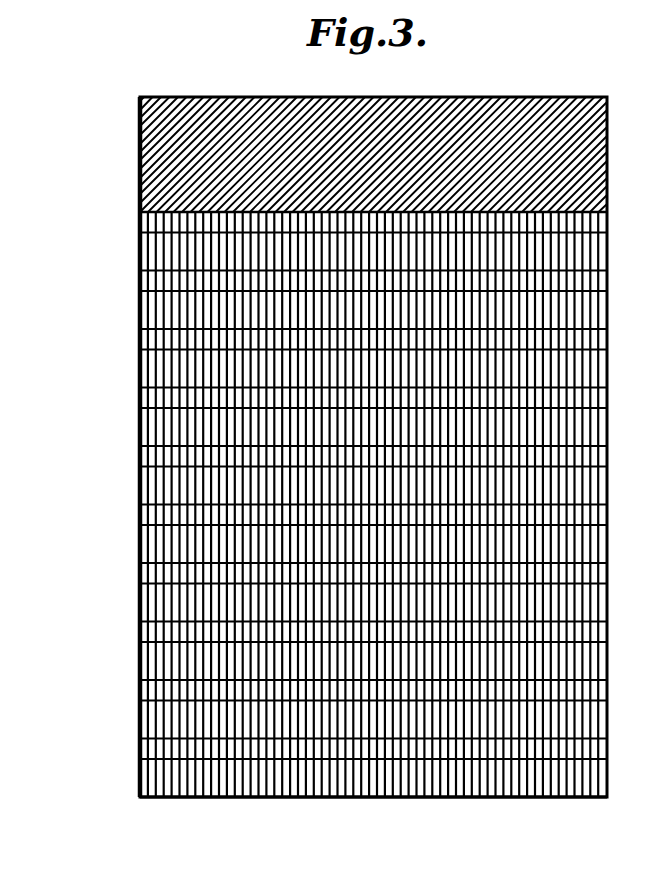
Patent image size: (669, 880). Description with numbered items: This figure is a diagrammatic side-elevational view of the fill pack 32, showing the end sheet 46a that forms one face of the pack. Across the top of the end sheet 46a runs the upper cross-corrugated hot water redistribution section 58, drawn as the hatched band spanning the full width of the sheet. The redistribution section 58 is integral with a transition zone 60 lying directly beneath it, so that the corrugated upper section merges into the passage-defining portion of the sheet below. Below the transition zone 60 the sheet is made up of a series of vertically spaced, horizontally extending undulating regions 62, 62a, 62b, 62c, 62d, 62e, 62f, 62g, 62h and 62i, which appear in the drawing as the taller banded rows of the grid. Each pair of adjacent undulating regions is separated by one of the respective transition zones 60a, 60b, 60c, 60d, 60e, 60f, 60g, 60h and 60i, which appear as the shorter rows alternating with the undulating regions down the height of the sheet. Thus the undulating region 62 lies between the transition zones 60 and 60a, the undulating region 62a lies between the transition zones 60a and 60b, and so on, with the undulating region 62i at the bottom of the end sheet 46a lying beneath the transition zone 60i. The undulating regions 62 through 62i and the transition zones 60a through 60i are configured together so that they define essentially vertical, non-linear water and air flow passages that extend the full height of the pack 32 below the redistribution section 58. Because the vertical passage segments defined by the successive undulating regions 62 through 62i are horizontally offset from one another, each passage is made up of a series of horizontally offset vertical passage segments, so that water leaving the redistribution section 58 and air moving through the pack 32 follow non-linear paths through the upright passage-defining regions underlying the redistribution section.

The fill pack 32 is at (263, 94).
The upper corrugated hot water redistribution section 58 is at (608, 130).
The end sheet 46a is at (307, 797).
The transition zone 60 is at (607, 232).
The undulating region 62 is at (607, 260).
The transition zone 60a is at (607, 287).
The undulating region 62a is at (607, 317).
The transition zone 60b is at (607, 342).
The undulating region 62b is at (607, 370).
The transition zone 60c is at (607, 398).
The undulating region 62c is at (607, 427).
The transition zone 60d is at (607, 455).
The undulating region 62d is at (607, 483).
The transition zone 60e is at (607, 515).
The undulating region 62e is at (607, 543).
The transition zone 60f is at (607, 572).
The undulating region 62f is at (607, 600).
The transition zone 60g is at (607, 630).
The undulating region 62g is at (607, 660).
The transition zone 60h is at (607, 688).
The undulating region 62h is at (607, 718).
The transition zone 60i is at (607, 747).
The undulating region 62i is at (607, 777).